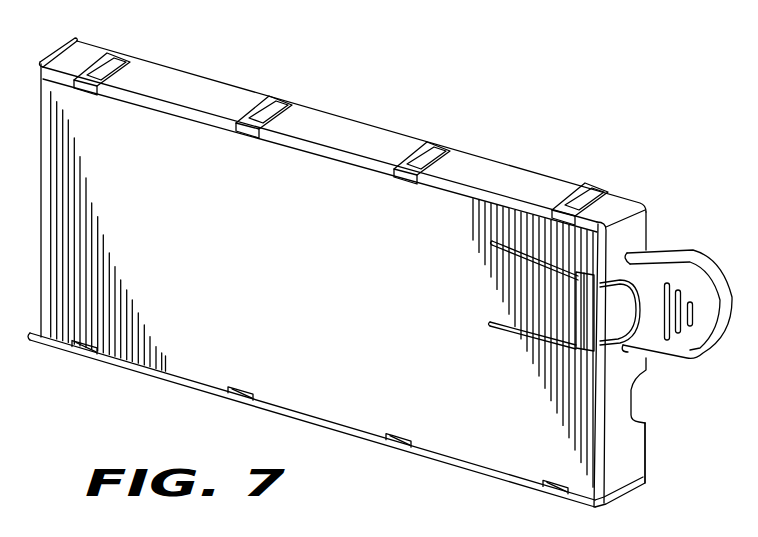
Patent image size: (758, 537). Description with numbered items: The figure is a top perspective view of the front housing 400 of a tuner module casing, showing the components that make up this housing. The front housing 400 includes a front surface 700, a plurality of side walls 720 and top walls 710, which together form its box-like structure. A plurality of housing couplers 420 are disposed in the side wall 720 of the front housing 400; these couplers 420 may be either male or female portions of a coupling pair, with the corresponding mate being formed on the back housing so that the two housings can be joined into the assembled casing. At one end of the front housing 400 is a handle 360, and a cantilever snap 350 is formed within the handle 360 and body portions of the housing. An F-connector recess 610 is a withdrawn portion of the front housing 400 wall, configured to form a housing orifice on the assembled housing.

The front housing 400 is at (99, 445).
The front surface 700 is at (306, 283).
The side walls 720 is at (184, 70).
The housing couplers 420 is at (425, 148).
The cantilever snap 350 is at (568, 318).
The handle 360 is at (677, 277).
The F-connector recess 610 is at (634, 393).
The top walls 710 is at (637, 459).